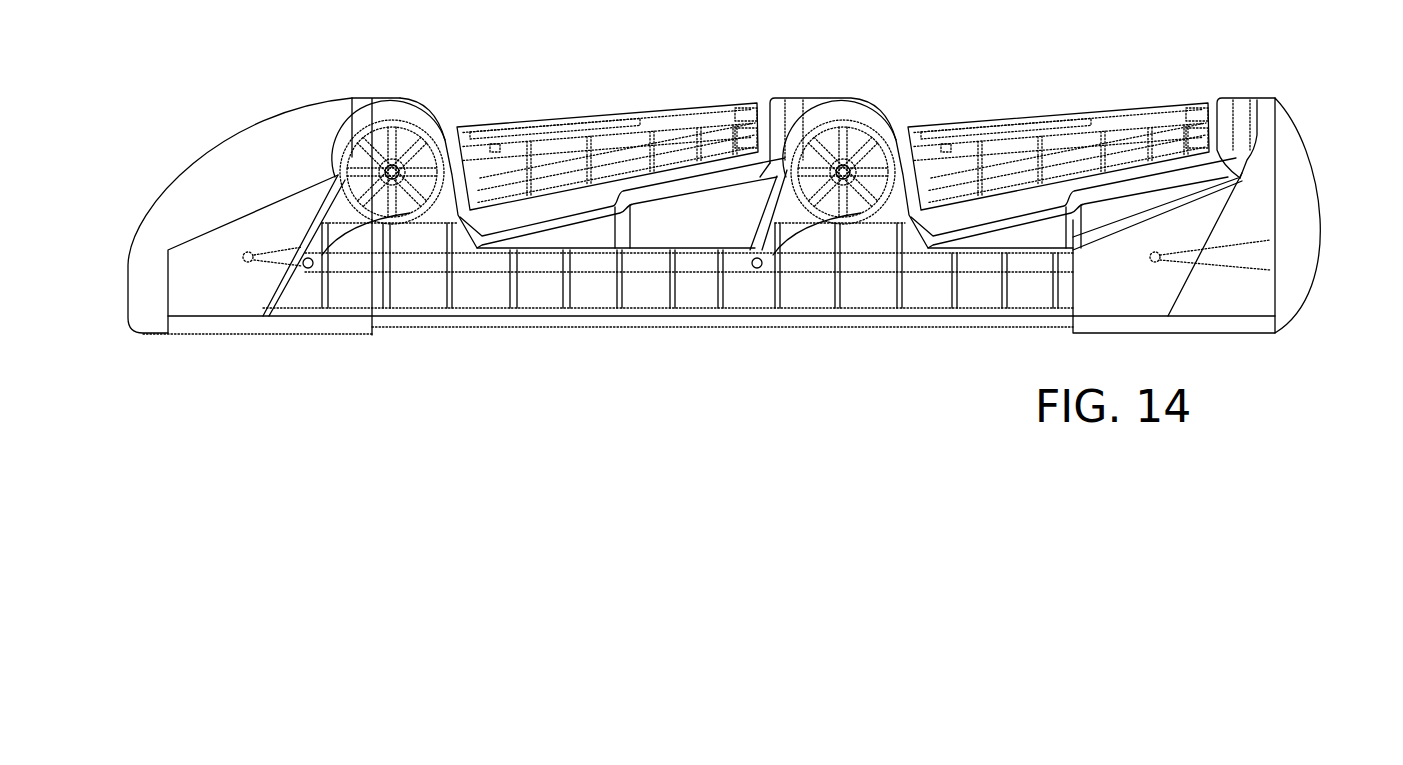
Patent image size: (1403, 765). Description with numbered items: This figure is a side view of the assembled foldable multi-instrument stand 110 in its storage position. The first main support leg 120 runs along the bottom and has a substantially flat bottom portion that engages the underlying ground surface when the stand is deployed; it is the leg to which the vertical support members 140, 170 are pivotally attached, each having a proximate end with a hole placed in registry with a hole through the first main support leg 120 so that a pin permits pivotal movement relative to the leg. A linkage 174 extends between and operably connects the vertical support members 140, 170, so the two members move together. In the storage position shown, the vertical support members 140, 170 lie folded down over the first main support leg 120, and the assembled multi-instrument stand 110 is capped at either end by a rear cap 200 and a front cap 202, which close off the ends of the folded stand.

The foldable multi-instrument stand 110 is at (133, 108).
The first main support leg 120 is at (927, 297).
The vertical support member 140 is at (1092, 112).
The vertical support member 170 is at (672, 118).
The linkage 174 is at (477, 263).
The rear cap 200 is at (156, 222).
The front cap 202 is at (1308, 173).